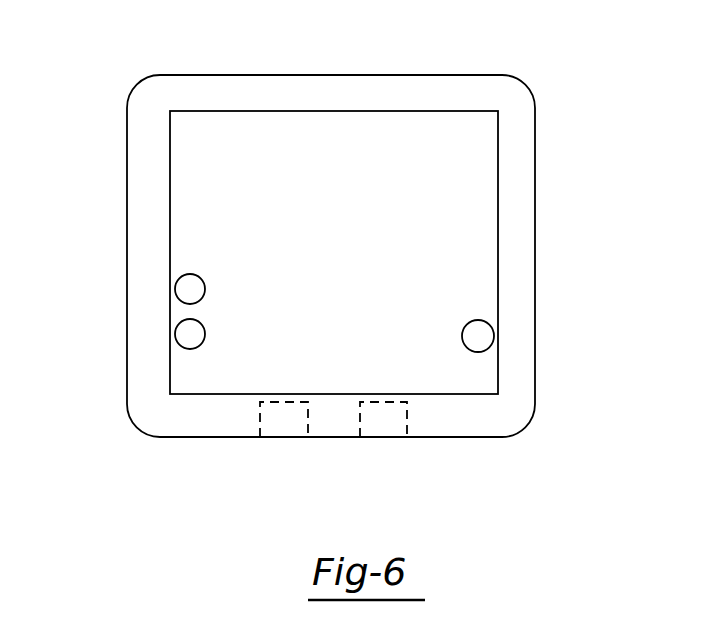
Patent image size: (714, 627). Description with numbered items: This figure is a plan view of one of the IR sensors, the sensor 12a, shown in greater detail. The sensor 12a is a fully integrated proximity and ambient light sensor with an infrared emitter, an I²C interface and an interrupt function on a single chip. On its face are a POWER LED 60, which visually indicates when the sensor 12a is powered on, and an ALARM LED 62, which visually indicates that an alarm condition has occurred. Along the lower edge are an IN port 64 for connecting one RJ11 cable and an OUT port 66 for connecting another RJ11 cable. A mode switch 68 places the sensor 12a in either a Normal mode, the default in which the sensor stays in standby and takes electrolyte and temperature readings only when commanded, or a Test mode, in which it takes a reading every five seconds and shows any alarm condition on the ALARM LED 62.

The sensor 12a is at (117, 110).
The POWER LED 60 is at (185, 290).
The ALARM LED 62 is at (185, 335).
The IN port 64 is at (282, 437).
The OUT port 66 is at (380, 437).
The mode switch 68 is at (478, 337).